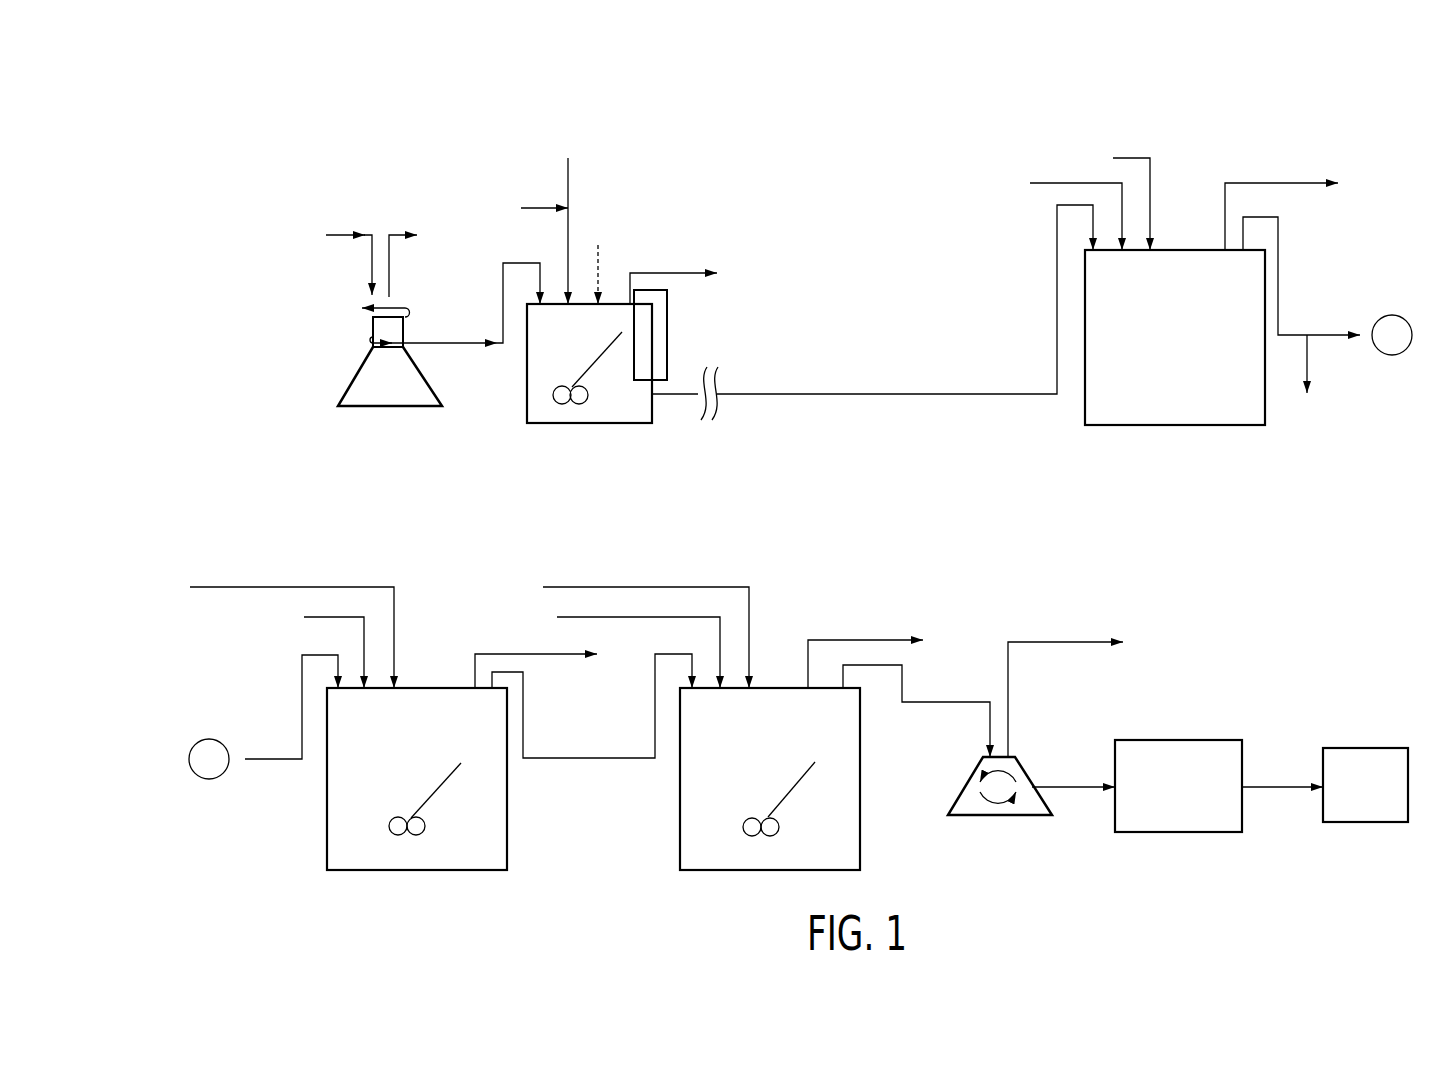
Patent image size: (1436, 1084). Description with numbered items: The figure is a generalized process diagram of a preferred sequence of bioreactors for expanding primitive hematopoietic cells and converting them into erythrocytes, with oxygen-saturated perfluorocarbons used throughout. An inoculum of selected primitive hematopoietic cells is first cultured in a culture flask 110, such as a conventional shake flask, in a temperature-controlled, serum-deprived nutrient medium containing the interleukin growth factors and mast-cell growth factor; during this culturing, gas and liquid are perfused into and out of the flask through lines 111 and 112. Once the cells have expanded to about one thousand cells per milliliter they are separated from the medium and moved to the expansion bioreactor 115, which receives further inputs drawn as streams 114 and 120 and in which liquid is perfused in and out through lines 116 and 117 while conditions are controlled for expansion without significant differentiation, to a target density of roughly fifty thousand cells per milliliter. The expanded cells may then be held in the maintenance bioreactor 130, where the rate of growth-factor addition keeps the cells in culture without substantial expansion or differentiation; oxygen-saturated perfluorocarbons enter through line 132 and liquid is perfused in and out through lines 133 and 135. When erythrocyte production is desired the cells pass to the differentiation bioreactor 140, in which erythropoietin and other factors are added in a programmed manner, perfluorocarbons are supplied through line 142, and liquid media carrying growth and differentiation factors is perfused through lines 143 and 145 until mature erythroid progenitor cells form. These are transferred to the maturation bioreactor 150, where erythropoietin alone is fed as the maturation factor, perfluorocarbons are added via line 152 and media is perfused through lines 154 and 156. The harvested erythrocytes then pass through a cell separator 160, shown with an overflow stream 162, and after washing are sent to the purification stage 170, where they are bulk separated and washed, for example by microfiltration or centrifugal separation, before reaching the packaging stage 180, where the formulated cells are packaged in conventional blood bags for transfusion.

The culture flask 110 is at (388, 406).
The line 111 is at (326, 256).
The line 112 is at (427, 257).
The nutrient feed stream 114 is at (524, 208).
The expansion bioreactor 115 is at (590, 425).
The line 116 is at (568, 212).
The line 117 is at (694, 279).
The inducer addition stream 120 is at (598, 257).
The maintenance bioreactor 130 is at (1177, 427).
The line 132 is at (1130, 157).
The line 133 is at (1075, 183).
The line 135 is at (1283, 181).
The differentiation bioreactor 140 is at (417, 871).
The line 142 is at (291, 586).
The line 143 is at (331, 618).
The line 145 is at (517, 652).
The maturation bioreactor 150 is at (772, 872).
The line 152 is at (647, 586).
The line 154 is at (638, 618).
The line 156 is at (868, 640).
The pump / centrifuge 160 is at (1000, 817).
The overflow stream from unit 160 162 is at (1057, 640).
The purification stage 170 is at (1182, 833).
The packaging stage 180 is at (1367, 823).